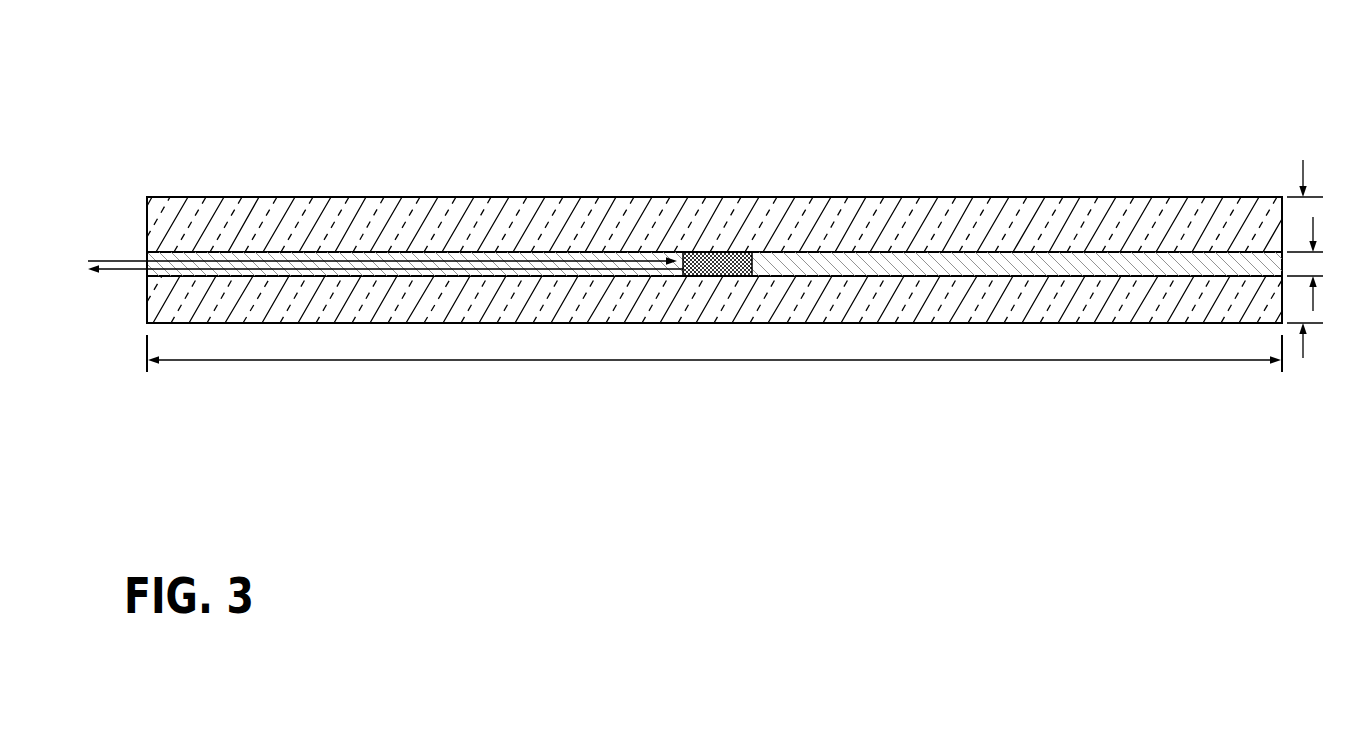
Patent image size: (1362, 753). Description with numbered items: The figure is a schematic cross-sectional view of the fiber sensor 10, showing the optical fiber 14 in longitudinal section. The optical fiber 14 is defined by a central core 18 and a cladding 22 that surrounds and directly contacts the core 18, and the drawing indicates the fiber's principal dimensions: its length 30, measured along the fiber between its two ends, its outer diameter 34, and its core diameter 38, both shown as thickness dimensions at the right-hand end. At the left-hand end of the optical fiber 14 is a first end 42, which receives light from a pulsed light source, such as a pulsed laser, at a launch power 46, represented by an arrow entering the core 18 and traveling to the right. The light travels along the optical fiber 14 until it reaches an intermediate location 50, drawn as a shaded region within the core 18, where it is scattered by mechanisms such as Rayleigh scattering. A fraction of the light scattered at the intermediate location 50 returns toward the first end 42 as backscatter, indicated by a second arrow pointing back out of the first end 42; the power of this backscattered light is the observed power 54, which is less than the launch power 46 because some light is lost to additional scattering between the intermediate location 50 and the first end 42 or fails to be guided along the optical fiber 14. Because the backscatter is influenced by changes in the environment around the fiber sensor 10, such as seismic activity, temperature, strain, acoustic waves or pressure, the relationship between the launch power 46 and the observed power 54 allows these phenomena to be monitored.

The fiber sensor 10 is at (239, 85).
The optical fiber 14 is at (884, 191).
The core 18 is at (988, 266).
The cladding 22 is at (1058, 213).
The length 30 is at (685, 361).
The outer diameter 34 is at (1303, 345).
The core diameter 38 is at (1313, 229).
The first end 42 is at (140, 214).
The launch power 46 is at (115, 261).
The intermediate location 50 is at (729, 253).
The observed power 54 is at (125, 270).